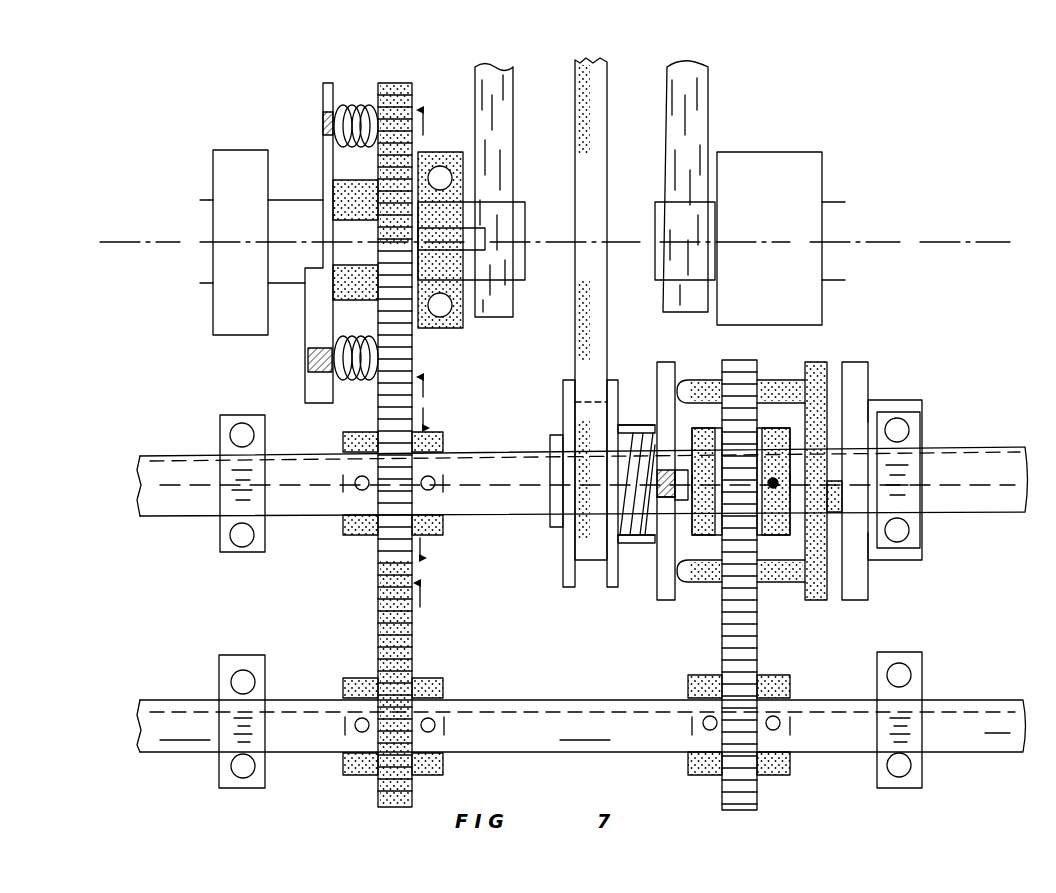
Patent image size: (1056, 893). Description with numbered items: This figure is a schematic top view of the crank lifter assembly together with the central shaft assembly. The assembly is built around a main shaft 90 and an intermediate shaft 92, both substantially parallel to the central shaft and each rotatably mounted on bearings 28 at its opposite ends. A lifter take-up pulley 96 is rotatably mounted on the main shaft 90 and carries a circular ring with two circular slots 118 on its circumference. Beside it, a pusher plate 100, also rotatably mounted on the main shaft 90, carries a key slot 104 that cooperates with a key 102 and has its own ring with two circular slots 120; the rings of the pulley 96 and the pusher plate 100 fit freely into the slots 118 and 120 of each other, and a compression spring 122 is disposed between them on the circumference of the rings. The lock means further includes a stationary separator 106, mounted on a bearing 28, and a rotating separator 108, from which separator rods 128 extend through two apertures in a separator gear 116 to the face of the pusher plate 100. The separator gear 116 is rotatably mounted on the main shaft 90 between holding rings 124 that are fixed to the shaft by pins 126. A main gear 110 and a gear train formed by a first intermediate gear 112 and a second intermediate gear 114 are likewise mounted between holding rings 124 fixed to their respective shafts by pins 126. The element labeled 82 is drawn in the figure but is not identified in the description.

The bearing 28 is at (225, 148).
The gear 82 is at (412, 92).
The main shaft 90 is at (313, 517).
The intermediate shaft 92 is at (283, 700).
The lifter take-up pulley 96 is at (560, 565).
The pusher plate 100 is at (672, 362).
The key 102 is at (683, 477).
The key slot 104 is at (660, 497).
The stationary separator 106 is at (865, 385).
The rotating separator 108 is at (828, 481).
The main gear 110 is at (412, 540).
The first intermediate gear 112 is at (412, 620).
The second intermediate gear 114 is at (757, 787).
The separator gear 116 is at (753, 371).
The circular slots 118 is at (645, 535).
The circular slots 120 is at (637, 462).
The compression spring 122 is at (635, 532).
The holding rings 124 is at (770, 535).
The pins 126 is at (776, 490).
The separator rods 128 is at (785, 382).